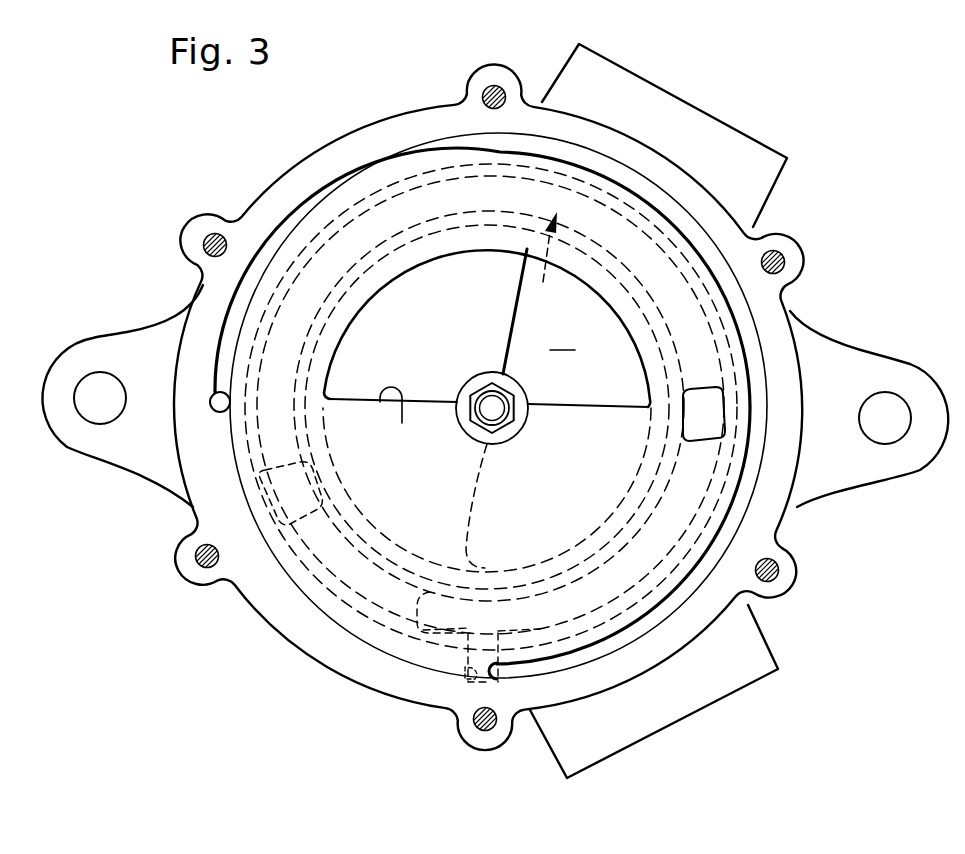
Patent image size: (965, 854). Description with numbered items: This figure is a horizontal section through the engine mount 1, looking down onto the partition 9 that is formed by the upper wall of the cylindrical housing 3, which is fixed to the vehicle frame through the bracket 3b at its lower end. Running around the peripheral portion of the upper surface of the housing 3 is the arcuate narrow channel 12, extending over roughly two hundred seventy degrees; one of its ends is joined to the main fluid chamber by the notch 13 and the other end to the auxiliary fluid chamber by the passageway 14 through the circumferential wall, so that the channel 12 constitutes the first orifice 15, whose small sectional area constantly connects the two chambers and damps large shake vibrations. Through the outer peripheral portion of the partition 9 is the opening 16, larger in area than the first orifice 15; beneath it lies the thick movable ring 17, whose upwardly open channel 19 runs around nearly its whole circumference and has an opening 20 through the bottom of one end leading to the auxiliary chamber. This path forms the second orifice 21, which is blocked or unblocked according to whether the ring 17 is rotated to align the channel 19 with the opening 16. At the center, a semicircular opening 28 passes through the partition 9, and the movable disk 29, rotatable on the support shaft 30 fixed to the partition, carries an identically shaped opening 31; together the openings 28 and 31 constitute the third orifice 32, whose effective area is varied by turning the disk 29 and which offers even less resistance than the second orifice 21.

The engine mount 1 is at (840, 104).
The housing 3 is at (293, 200).
The bracket 3b is at (93, 338).
The partition 9 is at (585, 425).
The arcuate narrow channel 12 is at (567, 158).
The notch 13 is at (470, 663).
The passageway 14 is at (226, 403).
The first orifice 15 is at (775, 370).
The opening 16 is at (698, 408).
The movable ring 17 is at (343, 608).
The channel 19 is at (620, 553).
The opening 20 is at (325, 498).
The second orifice 21 is at (552, 259).
The semicircular opening 28 is at (401, 419).
The movable disk 29 is at (397, 568).
The support shaft 30 is at (489, 405).
The opening 31 is at (522, 332).
The third orifice 32 is at (562, 336).